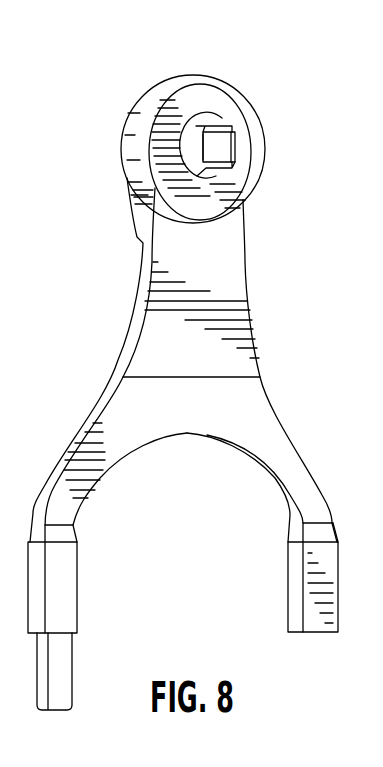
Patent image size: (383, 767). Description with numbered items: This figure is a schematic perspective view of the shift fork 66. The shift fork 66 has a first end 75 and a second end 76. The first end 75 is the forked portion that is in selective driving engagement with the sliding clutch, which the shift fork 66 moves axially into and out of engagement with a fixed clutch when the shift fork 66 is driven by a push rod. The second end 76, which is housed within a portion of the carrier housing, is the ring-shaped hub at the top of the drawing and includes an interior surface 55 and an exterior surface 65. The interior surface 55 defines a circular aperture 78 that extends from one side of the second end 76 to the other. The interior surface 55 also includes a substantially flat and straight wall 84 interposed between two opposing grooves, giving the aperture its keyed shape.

The shift fork 66 is at (278, 94).
The second end 76 is at (265, 152).
The exterior surface 65 is at (247, 182).
The interior surface 55 is at (207, 177).
The circular aperture 78 is at (193, 139).
The substantially flat and straight wall 84 is at (203, 148).
The first end 75 is at (273, 423).